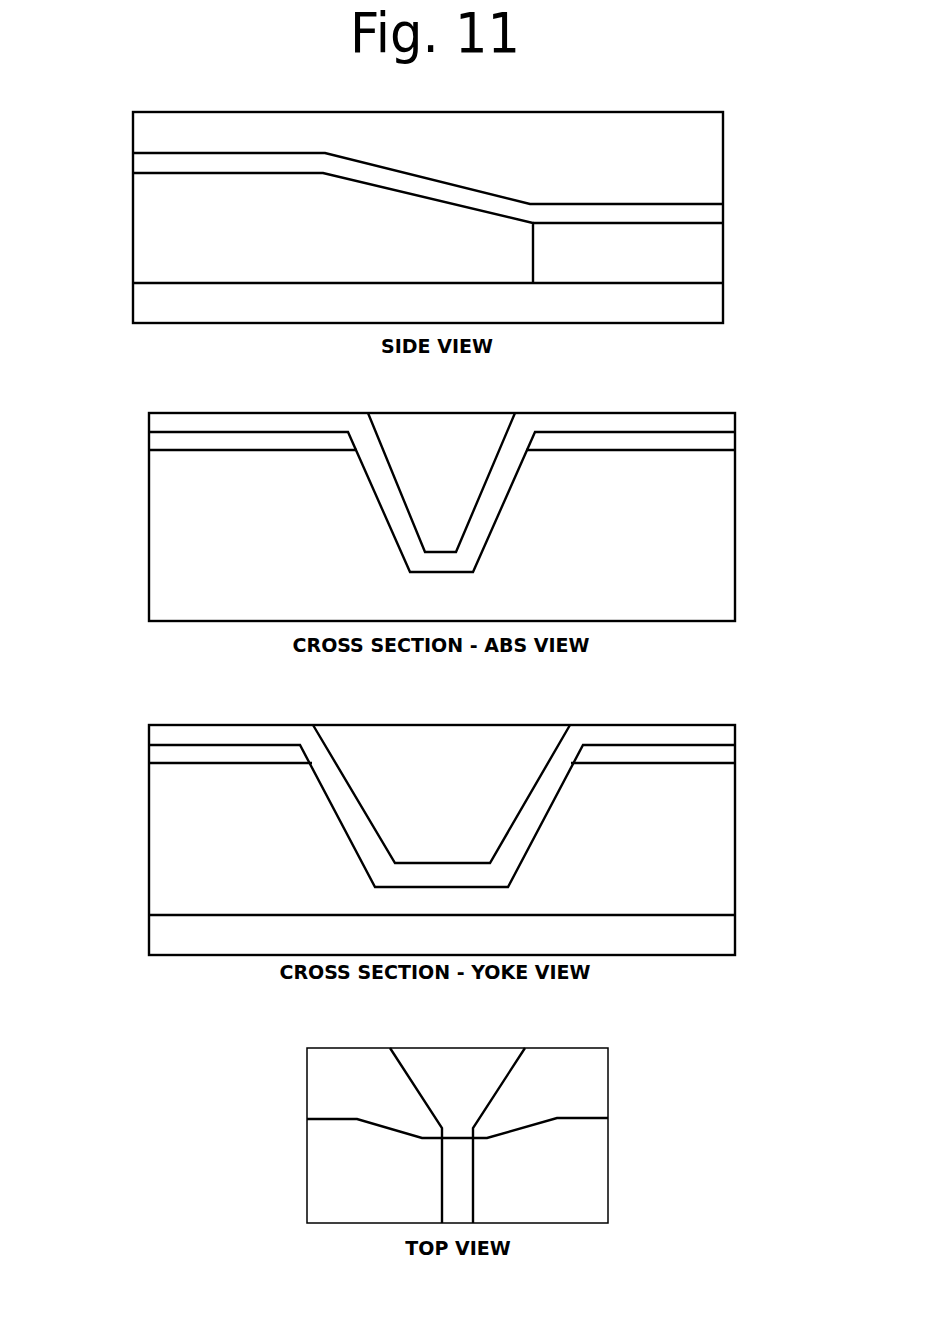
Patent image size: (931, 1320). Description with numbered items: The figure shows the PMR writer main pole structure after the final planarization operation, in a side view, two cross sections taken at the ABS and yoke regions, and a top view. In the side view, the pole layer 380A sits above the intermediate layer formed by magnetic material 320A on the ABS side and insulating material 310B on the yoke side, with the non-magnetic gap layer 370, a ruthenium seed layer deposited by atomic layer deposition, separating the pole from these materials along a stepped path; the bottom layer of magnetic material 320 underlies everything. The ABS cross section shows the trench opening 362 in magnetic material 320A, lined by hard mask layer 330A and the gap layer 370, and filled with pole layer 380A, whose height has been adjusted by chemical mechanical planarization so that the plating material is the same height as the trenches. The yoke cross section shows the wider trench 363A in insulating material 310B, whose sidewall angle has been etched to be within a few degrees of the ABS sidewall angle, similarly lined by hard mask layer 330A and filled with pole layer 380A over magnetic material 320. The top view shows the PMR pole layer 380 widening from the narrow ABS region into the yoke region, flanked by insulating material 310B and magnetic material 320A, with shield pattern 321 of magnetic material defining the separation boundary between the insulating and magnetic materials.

The non-magnetic gap layer 370 is at (111, 158).
The pole layer 380A is at (433, 156).
The magnetic material 320A is at (276, 242).
The insulating material 310B is at (600, 265).
The magnetic material 320 is at (407, 315).
The hard mask layer 330A is at (143, 440).
The trench opening 362 is at (434, 514).
The trench 363A is at (460, 839).
The PMR pole layer 380 is at (437, 1095).
The shield pattern 321 is at (627, 1115).